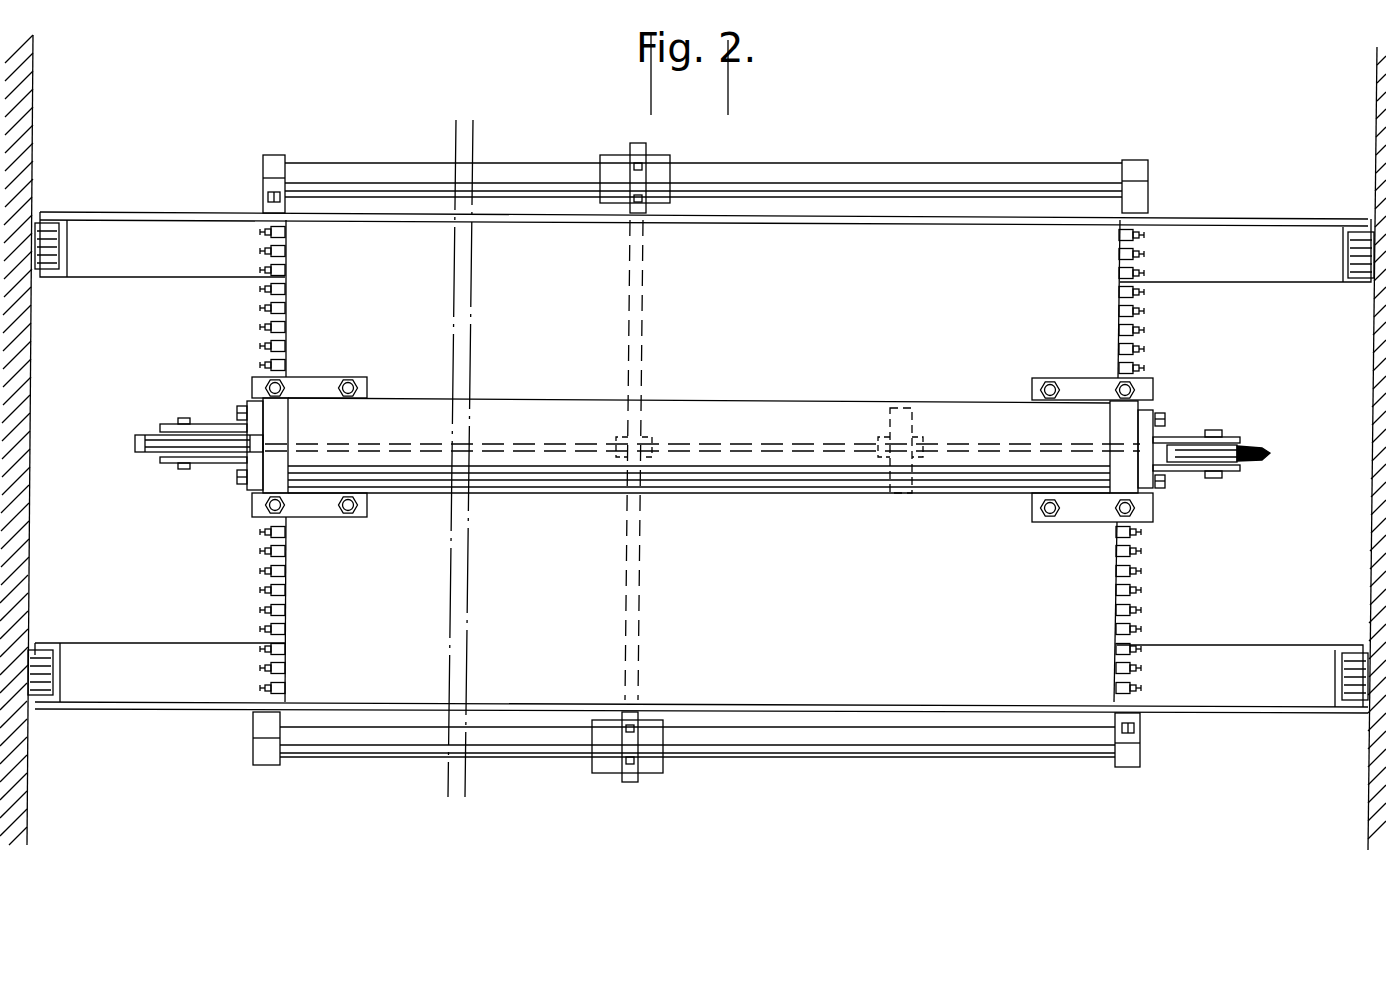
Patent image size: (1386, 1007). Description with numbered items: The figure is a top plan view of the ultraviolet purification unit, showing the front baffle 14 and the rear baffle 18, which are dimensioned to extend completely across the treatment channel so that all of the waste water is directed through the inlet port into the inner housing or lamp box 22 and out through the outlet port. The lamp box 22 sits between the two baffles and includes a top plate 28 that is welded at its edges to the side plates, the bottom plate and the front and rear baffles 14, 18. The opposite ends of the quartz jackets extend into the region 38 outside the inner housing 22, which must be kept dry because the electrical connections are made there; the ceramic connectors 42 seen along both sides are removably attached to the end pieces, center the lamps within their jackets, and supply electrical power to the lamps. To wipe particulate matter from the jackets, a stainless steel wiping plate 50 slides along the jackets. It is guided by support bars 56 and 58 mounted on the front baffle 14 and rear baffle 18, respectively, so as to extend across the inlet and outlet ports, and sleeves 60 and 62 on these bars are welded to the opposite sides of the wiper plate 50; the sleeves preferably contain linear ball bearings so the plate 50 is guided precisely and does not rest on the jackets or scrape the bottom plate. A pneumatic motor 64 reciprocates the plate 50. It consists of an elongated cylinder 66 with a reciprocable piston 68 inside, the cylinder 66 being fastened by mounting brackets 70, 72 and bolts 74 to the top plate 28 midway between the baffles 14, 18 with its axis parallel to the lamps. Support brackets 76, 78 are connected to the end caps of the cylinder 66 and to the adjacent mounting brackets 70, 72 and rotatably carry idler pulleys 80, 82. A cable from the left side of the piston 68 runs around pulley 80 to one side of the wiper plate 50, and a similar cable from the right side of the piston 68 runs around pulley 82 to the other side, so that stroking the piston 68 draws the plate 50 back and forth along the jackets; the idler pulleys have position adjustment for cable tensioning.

The front baffle 14 is at (1232, 715).
The rear baffle 18 is at (1255, 212).
The inner housing or lamp box 22 is at (432, 683).
The top plate 28 is at (1058, 695).
The region outside the inner housing 38 is at (205, 540).
The ceramic connectors 42 is at (262, 323).
The wiping plate 50 is at (645, 293).
The support bar 56 is at (862, 745).
The support bar 58 is at (880, 172).
The sleeve 60 is at (648, 775).
The sleeve 62 is at (668, 153).
The pneumatic motor 64 is at (578, 392).
The elongated cylinder 66 is at (801, 398).
The reciprocable piston 68 is at (912, 415).
The mounting bracket 70 is at (316, 507).
The mounting bracket 72 is at (1082, 512).
The bolts 74 is at (357, 380).
The support bracket 76 is at (213, 424).
The support bracket 78 is at (1195, 436).
The idler pulley 80 is at (148, 455).
The idler pulley 82 is at (1268, 455).